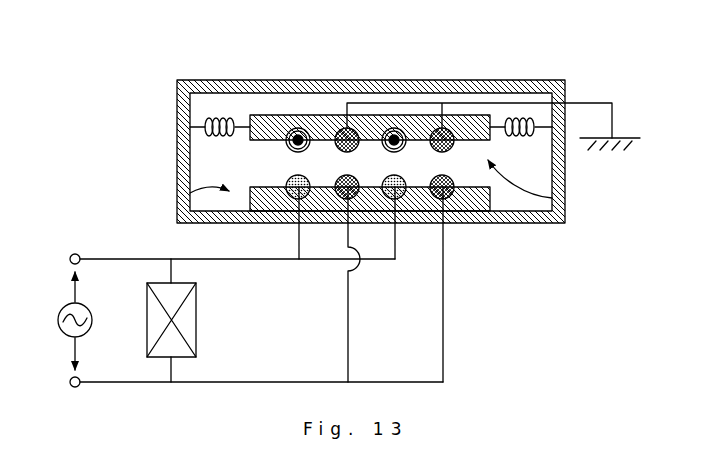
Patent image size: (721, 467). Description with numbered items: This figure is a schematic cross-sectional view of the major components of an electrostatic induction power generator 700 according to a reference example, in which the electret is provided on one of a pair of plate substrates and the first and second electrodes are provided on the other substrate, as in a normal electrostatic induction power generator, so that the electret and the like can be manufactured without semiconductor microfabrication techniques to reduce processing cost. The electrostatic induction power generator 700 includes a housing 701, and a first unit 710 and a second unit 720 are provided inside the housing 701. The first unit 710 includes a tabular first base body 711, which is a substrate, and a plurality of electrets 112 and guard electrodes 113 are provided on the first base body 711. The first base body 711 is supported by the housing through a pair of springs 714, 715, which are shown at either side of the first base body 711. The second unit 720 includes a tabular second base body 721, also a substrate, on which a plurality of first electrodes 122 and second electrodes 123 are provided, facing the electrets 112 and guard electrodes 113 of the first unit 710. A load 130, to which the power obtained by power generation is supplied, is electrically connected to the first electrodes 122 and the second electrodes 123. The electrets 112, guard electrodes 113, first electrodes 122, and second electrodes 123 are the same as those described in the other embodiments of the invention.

The electrostatic induction power generator 700 is at (381, 201).
The housing 701 is at (207, 80).
The first unit 710 is at (553, 198).
The first base body 711 is at (268, 115).
The electret 112 is at (310, 118).
The guard electrode 113 is at (368, 117).
The spring 714 is at (205, 124).
The spring 715 is at (565, 123).
The second unit 720 is at (190, 193).
The second base body 721 is at (508, 224).
The first electrode 122 is at (427, 224).
The second electrode 123 is at (473, 224).
The load 130 is at (196, 318).